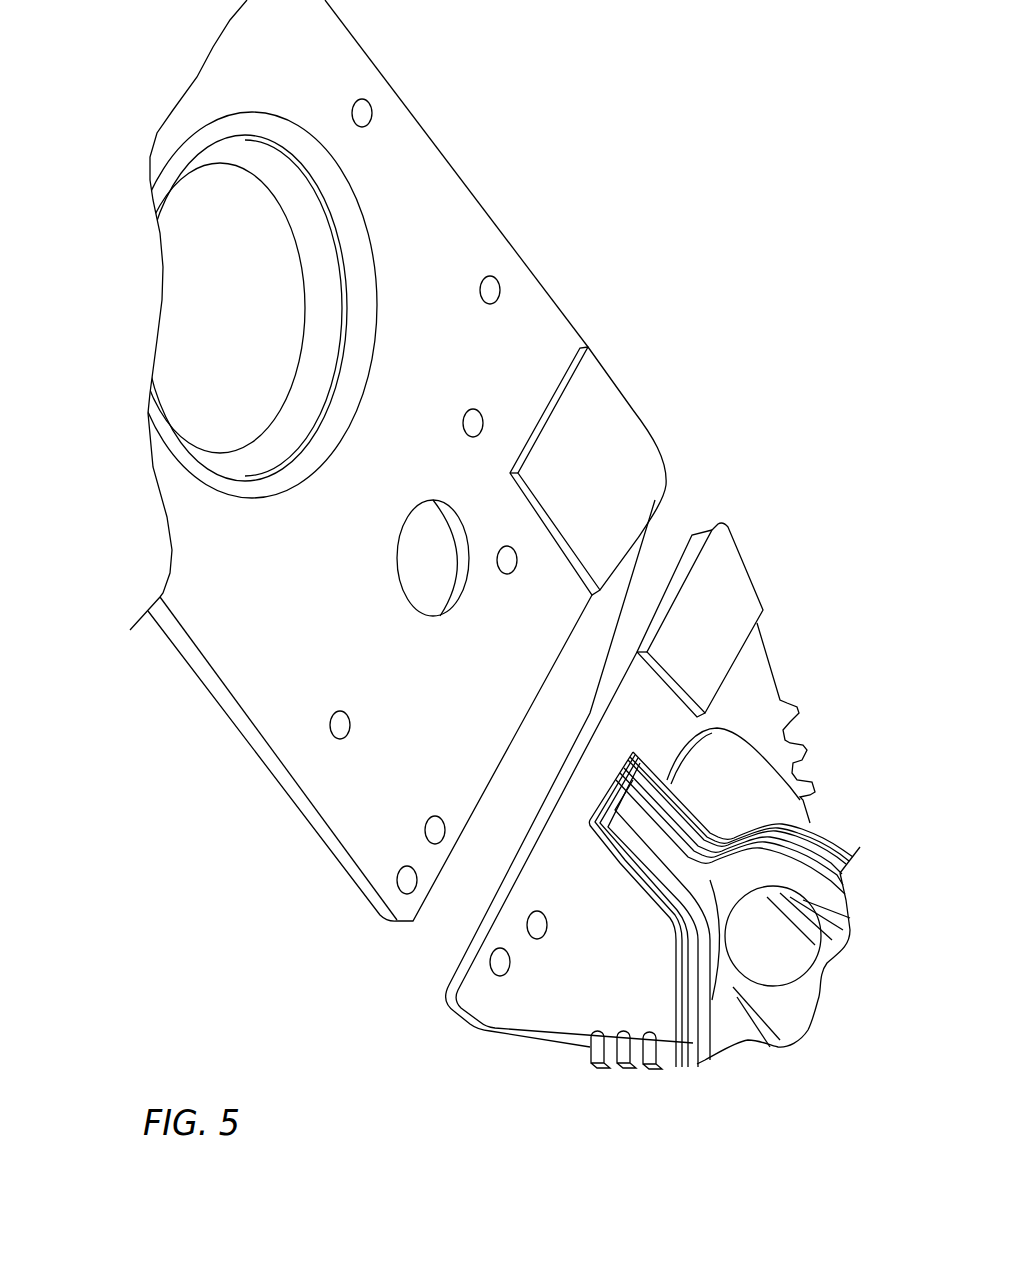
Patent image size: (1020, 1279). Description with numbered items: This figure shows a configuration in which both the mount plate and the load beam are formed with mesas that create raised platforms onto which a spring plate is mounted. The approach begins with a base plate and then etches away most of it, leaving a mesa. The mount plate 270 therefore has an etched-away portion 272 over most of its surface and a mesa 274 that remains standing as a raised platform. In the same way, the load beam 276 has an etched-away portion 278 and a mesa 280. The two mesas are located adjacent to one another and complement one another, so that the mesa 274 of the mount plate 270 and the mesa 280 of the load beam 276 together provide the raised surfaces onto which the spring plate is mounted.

The mount plate 270 is at (505, 77).
The etched-away portion 272 is at (503, 267).
The mesa 274 is at (603, 406).
The load beam 276 is at (412, 1018).
The etched-away portion 278 is at (753, 690).
The mesa 280 is at (727, 566).